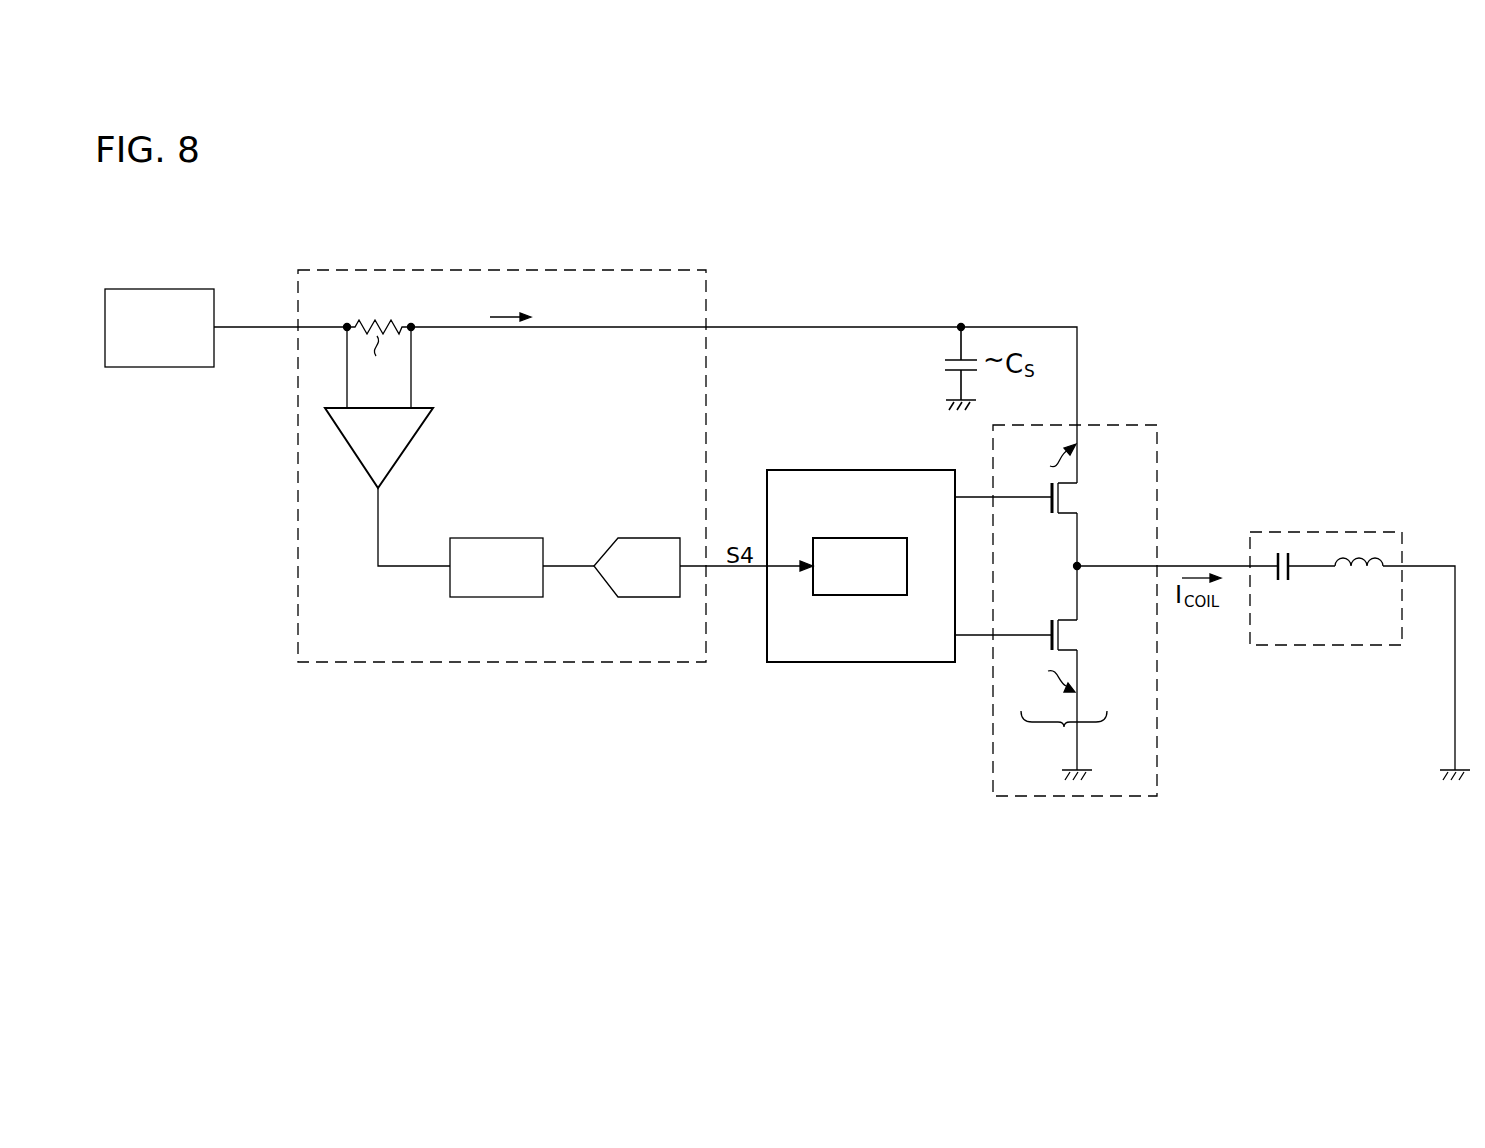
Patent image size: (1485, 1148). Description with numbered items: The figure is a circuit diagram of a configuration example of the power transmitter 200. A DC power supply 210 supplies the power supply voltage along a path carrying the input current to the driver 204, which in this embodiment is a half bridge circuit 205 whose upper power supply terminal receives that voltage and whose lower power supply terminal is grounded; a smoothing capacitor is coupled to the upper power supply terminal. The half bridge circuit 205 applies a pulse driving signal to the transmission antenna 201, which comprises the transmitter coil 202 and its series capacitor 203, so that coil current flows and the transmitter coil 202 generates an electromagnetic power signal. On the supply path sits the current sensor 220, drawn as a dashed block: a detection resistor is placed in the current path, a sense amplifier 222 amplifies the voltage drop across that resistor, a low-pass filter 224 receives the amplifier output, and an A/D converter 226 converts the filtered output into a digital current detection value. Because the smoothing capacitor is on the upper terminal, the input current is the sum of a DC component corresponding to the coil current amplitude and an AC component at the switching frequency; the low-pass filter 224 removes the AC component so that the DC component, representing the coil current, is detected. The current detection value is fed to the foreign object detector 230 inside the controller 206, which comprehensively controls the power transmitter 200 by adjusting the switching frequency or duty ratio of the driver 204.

The power transmitter 200 is at (763, 866).
The transmission antenna 201 is at (1326, 564).
The transmitter coil 202 is at (1363, 580).
The resonant capacitor 203 is at (1283, 585).
The driver 204 is at (1075, 585).
The half bridge circuit 205 is at (1064, 735).
The controller 206 is at (861, 542).
The DC power supply 210 is at (153, 289).
The current sensor 220 is at (502, 499).
The sense amplifier 222 is at (352, 452).
The low-pass filter 224 is at (488, 538).
The A/D converter 226 is at (640, 538).
The foreign object detector 230 is at (860, 596).